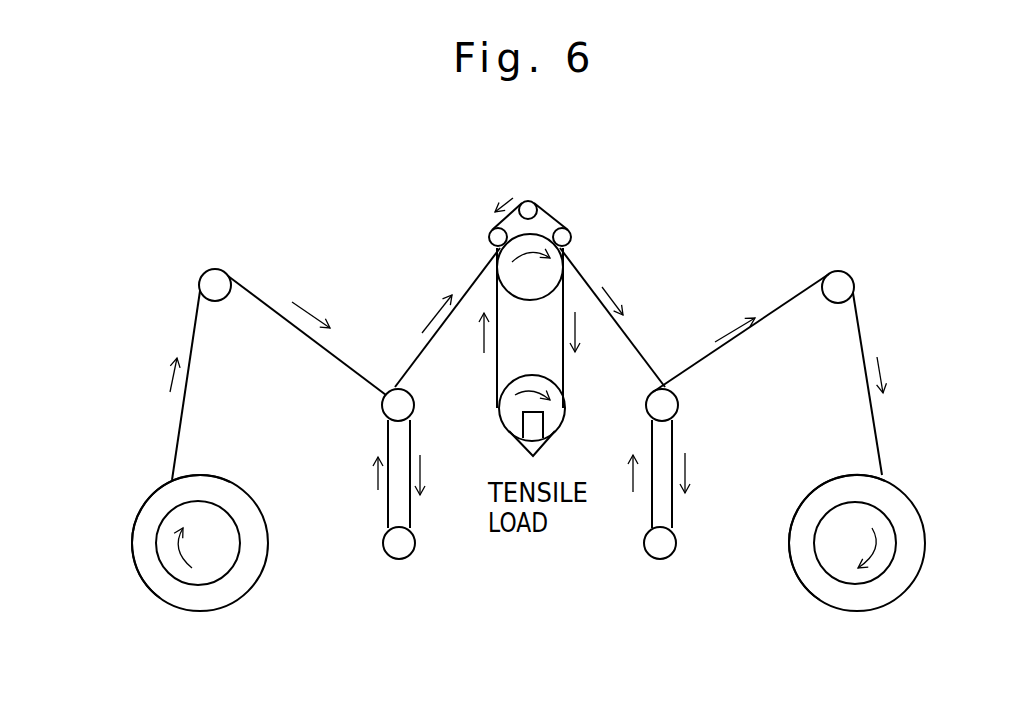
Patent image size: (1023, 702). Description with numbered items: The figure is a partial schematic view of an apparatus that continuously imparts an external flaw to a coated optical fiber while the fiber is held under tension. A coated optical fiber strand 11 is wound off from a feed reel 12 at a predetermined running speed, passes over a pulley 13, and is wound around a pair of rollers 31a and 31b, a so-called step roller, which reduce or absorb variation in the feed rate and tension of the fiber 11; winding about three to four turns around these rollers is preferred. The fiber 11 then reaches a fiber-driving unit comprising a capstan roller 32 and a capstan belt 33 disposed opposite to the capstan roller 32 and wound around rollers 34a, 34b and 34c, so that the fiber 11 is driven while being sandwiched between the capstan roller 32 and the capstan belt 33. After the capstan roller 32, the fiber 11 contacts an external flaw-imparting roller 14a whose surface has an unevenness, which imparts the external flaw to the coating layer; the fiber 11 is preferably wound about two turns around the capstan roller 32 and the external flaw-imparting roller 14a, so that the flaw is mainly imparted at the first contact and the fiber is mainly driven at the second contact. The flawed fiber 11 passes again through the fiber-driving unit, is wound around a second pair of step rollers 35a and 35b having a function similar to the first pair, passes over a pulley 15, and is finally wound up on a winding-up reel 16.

The coated optical fiber strand 11 is at (181, 418).
The feed reel 12 is at (247, 582).
The pulley 13 is at (220, 282).
The external flaw-imparting roller 14a is at (568, 410).
The pulley 15 is at (848, 287).
The winding-up reel 16 is at (902, 585).
The roller 31a is at (393, 410).
The roller 31b is at (385, 543).
The capstan roller 32 is at (527, 270).
The capstan belt 33 is at (550, 212).
The roller 34a is at (495, 233).
The roller 34b is at (526, 201).
The roller 34c is at (563, 233).
The step roller 35a is at (673, 402).
The step roller 35b is at (668, 545).